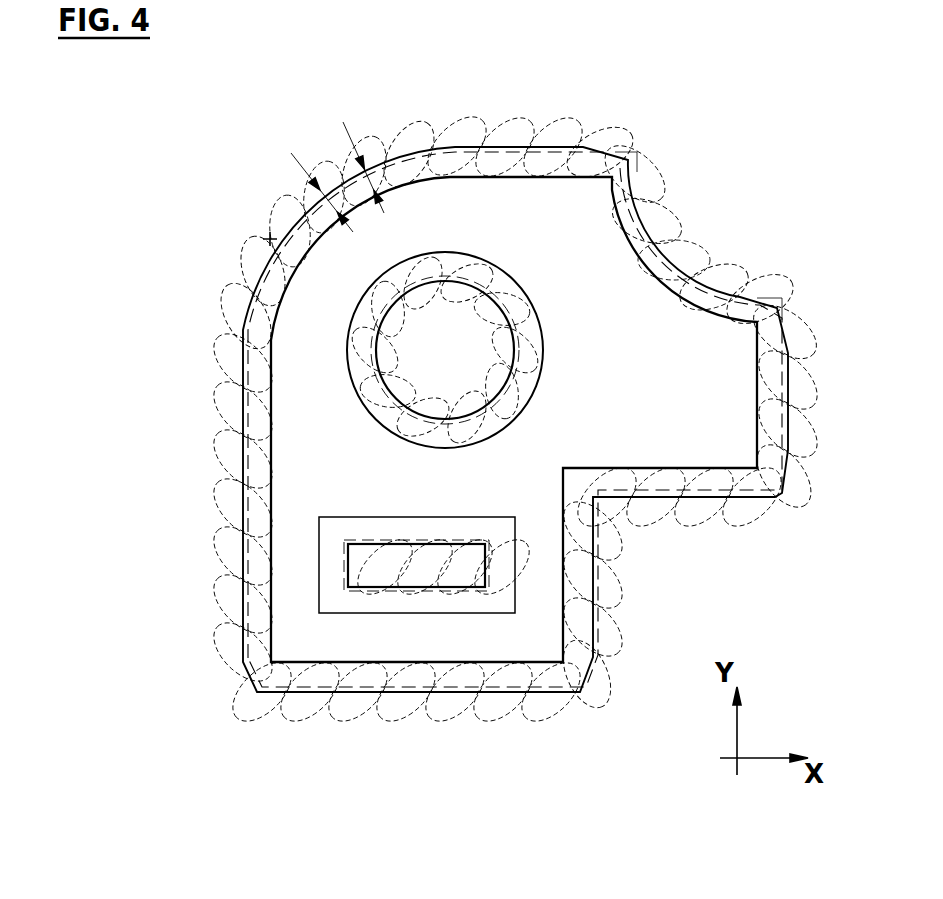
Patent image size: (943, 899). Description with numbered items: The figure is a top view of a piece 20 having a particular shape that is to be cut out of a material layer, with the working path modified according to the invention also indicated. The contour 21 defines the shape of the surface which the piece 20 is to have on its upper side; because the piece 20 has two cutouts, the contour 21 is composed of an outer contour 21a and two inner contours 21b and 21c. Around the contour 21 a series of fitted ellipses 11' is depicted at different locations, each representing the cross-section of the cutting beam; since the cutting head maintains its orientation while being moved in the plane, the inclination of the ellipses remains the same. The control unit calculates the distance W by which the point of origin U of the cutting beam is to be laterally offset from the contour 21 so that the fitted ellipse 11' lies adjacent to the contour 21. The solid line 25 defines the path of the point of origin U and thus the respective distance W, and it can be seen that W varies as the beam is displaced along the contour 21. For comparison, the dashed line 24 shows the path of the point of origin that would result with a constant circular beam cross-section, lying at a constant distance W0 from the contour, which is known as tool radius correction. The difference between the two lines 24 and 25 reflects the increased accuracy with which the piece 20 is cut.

The piece 20 is at (630, 318).
The contour 21 is at (425, 419).
The outer contour 21a is at (277, 318).
The inner contour 21b is at (350, 378).
The inner contour 21c is at (362, 517).
The dashed line 24 is at (425, 148).
The solid line 25 is at (517, 147).
The fitted ellipse 11' is at (513, 418).
The point of origin U is at (268, 243).
The distance W is at (320, 169).
The constant distance W0 is at (358, 146).